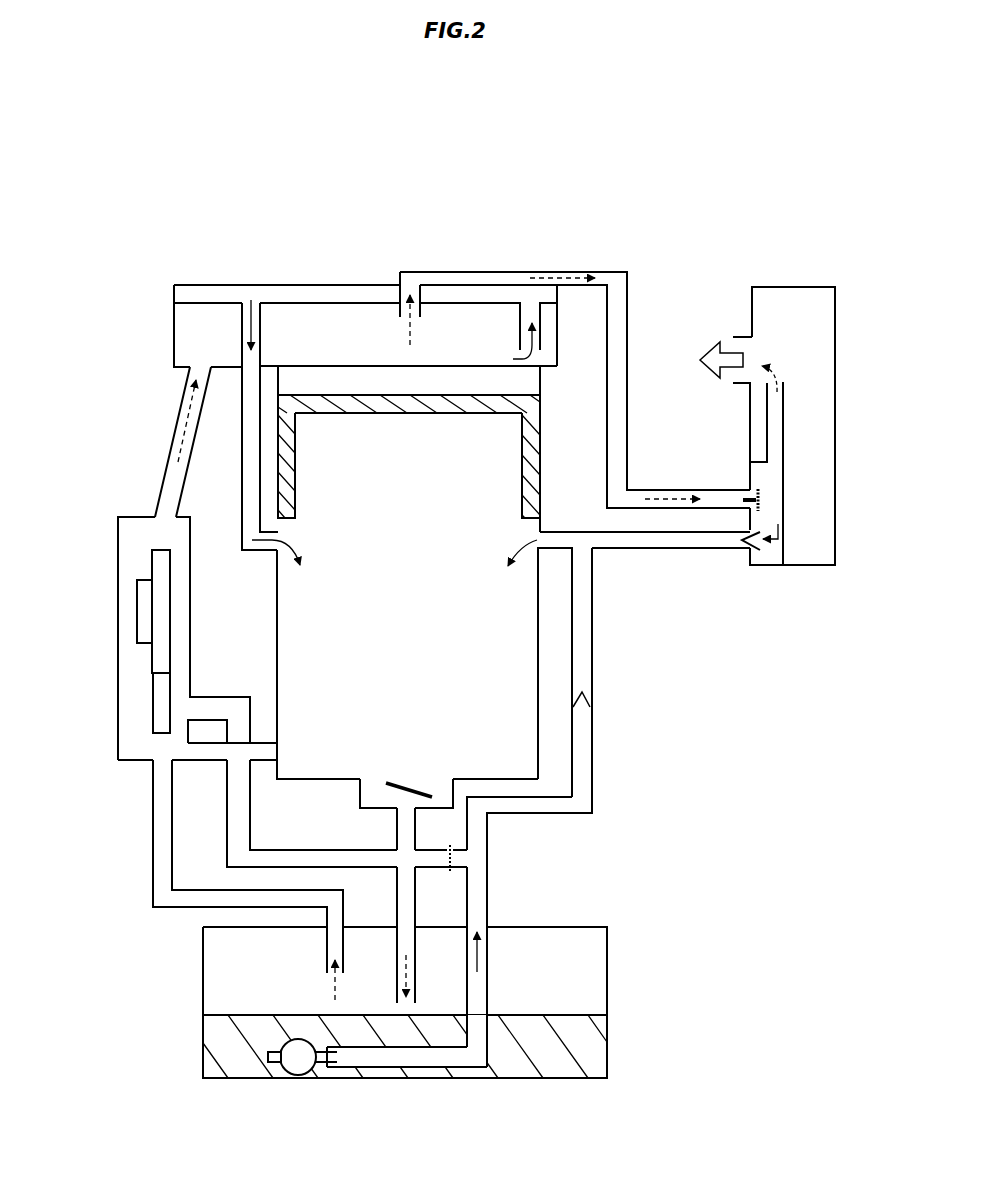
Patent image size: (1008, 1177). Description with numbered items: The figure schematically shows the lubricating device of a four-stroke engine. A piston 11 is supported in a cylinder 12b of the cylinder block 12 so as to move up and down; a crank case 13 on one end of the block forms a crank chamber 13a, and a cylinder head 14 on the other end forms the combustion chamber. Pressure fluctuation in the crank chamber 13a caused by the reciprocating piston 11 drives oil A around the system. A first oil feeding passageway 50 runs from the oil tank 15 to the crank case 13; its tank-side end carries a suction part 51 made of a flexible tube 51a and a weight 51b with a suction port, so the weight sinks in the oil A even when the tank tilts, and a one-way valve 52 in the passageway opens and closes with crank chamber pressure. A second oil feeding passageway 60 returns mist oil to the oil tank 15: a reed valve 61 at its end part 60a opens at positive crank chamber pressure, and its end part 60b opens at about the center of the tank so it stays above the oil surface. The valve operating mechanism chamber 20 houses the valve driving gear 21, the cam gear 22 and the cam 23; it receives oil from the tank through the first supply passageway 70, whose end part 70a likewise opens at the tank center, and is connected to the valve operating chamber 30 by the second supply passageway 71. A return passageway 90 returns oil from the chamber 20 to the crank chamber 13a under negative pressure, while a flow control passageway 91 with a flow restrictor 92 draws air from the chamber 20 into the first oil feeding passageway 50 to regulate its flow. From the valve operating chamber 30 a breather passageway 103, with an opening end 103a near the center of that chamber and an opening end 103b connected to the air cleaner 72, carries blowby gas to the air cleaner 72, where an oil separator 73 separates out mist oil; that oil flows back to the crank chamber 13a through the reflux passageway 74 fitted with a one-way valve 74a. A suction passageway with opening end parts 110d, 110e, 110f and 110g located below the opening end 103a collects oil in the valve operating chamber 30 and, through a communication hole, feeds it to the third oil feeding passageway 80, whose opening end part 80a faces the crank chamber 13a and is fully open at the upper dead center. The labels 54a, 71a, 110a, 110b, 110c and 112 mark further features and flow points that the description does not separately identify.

The piston 11 is at (296, 471).
The cylinder block 12 is at (542, 433).
The cylinder 12b is at (533, 462).
The crank case 13 is at (540, 632).
The crank chamber 13a is at (427, 664).
The cylinder head 14 is at (560, 350).
The oil tank 15 is at (610, 966).
The valve operating mechanism chamber 20 is at (140, 545).
The valve driving gear 21 is at (160, 713).
The cam gear 22 is at (160, 566).
The cam 23 is at (145, 605).
The valve operating chamber 30 is at (292, 302).
The first oil feeding passageway 50 is at (594, 752).
The suction part 51 is at (280, 1068).
The flexible tube 51a is at (360, 1068).
The weight 51b is at (298, 1078).
The one-way valve 52 is at (586, 696).
The inlet flow 54a is at (548, 535).
The second oil feeding passageway 60 is at (418, 888).
The end part 60a is at (378, 790).
The end part 60b is at (410, 1002).
The reed valve 61 is at (420, 786).
The first supply passageway 70 is at (152, 828).
The end part 70a is at (327, 975).
The second supply passageway 71 is at (172, 440).
The flow path 71a is at (202, 360).
The air cleaner 72 is at (836, 315).
The oil separator 73 is at (785, 462).
The reflux passageway 74 is at (667, 550).
The one-way valve 74a is at (755, 566).
The third oil feeding passageway 80 is at (241, 447).
The opening end part 80a is at (268, 551).
The return passageway 90 is at (198, 765).
The flow control passageway 91 is at (305, 850).
The flow restrictor 92 is at (455, 862).
The breather passageway 103 is at (450, 278).
The opening end 103a is at (415, 312).
The opening end 103b is at (762, 491).
The port 110a is at (432, 226).
The port 110b is at (432, 226).
The port 110c is at (357, 295).
The opening end part 110d is at (709, 294).
The opening end part 110e is at (709, 294).
The opening end part 110f is at (709, 294).
The opening end part 110g is at (533, 317).
The partition wall 112 is at (262, 332).
The oil A is at (607, 1042).